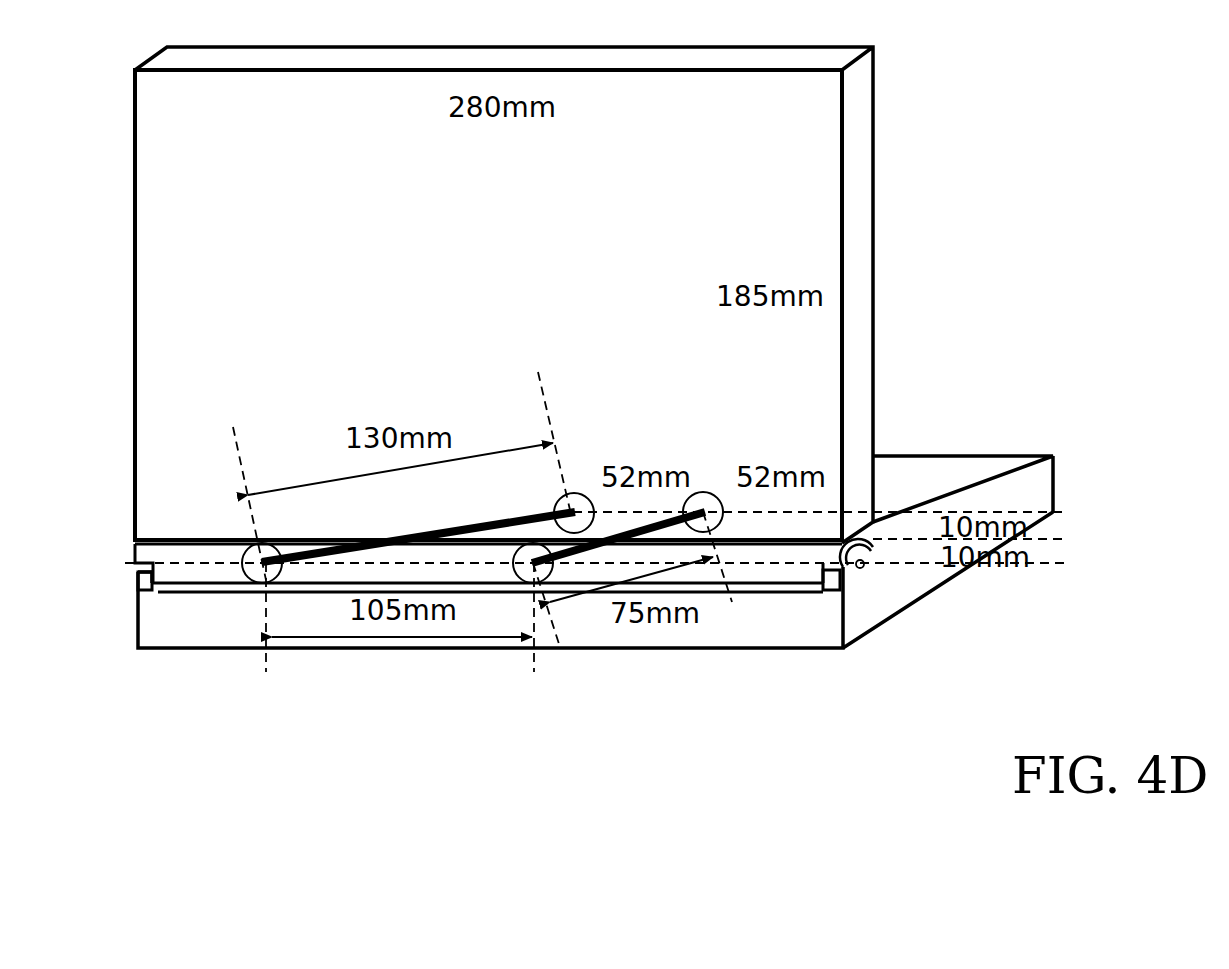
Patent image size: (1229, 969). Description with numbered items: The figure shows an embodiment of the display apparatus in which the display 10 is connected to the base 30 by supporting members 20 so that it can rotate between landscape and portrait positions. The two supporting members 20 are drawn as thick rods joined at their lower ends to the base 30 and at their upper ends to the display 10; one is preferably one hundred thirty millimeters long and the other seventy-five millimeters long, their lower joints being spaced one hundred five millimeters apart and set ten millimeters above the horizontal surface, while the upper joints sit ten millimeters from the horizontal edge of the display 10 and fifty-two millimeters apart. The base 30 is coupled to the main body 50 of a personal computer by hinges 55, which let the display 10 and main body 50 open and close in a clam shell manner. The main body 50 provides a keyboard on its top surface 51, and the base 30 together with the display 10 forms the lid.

The display 10 is at (862, 155).
The supporting members 20 is at (467, 540).
The base 30 is at (757, 573).
The main body 50 is at (920, 613).
The top surface 51 is at (927, 467).
The hinges 55 is at (145, 583).